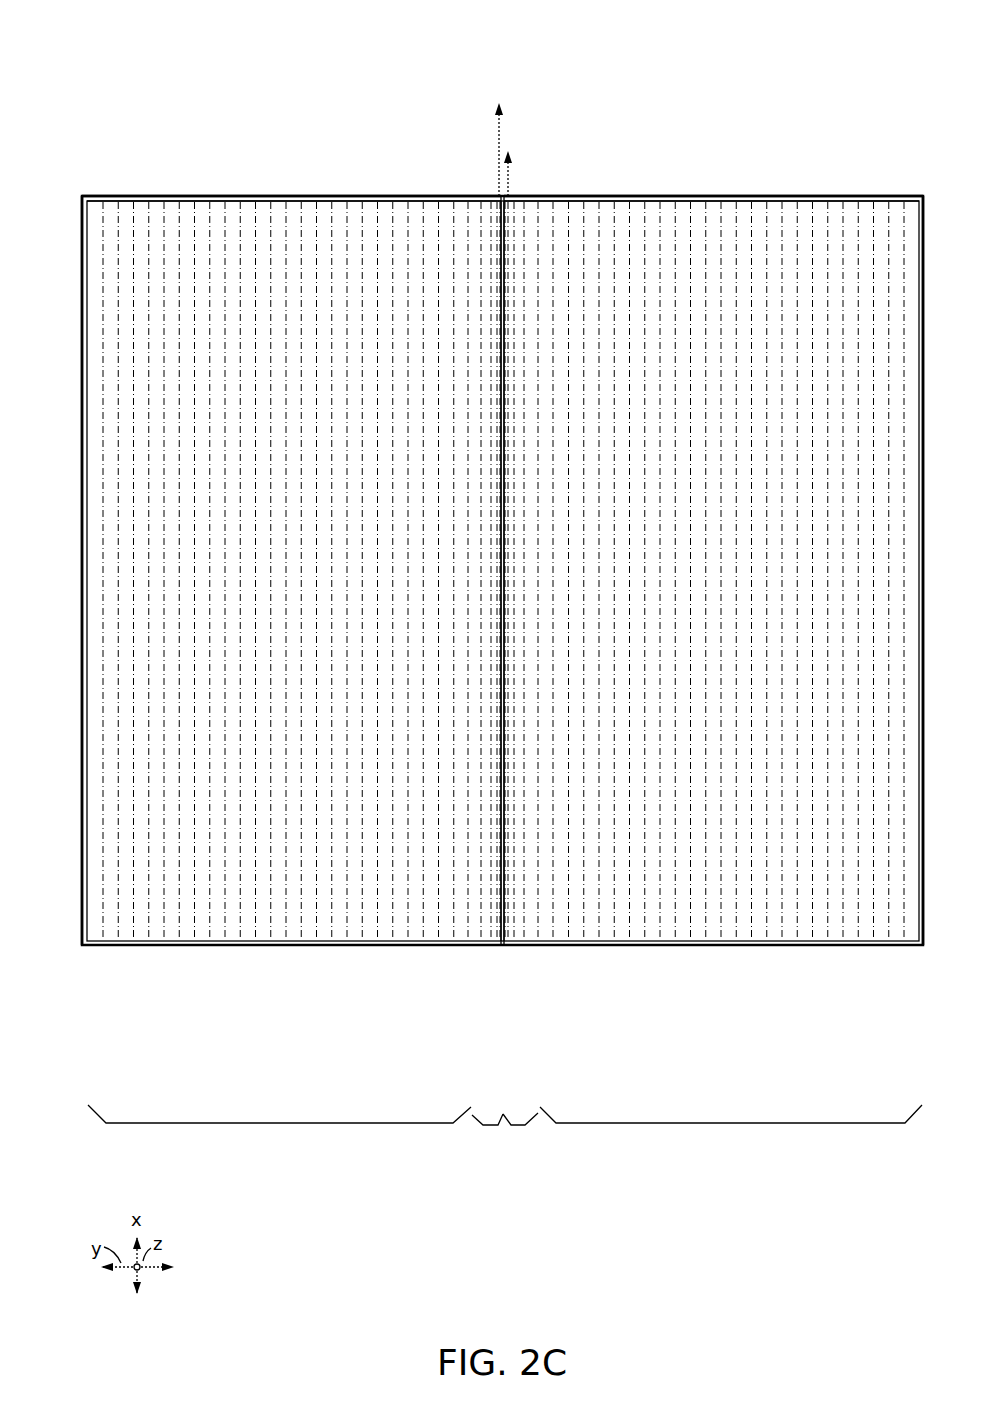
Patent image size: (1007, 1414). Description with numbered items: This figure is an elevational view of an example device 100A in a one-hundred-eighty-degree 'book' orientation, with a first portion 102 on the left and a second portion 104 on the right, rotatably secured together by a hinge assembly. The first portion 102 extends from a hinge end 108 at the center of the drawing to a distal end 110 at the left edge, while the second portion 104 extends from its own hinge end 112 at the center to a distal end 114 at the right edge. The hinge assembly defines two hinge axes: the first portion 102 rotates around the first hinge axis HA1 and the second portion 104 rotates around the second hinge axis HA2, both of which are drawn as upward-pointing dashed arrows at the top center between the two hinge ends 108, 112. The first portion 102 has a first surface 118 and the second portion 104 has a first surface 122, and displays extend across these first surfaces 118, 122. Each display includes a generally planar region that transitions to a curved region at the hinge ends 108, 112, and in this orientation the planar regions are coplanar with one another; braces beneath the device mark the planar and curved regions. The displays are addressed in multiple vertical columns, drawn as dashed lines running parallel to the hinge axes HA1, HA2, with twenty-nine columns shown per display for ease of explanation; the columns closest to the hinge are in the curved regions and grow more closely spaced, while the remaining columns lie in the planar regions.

The device 100A is at (485, 42).
The first portion 102 is at (168, 190).
The second portion 104 is at (826, 190).
The hinge end 108 is at (500, 196).
The distal end 110 is at (83, 196).
The hinge end 112 is at (507, 196).
The distal end 114 is at (920, 196).
The first surface 118 is at (316, 196).
The first surface 122 is at (786, 196).
The first hinge axis HA1 is at (500, 133).
The second hinge axis HA2 is at (524, 160).